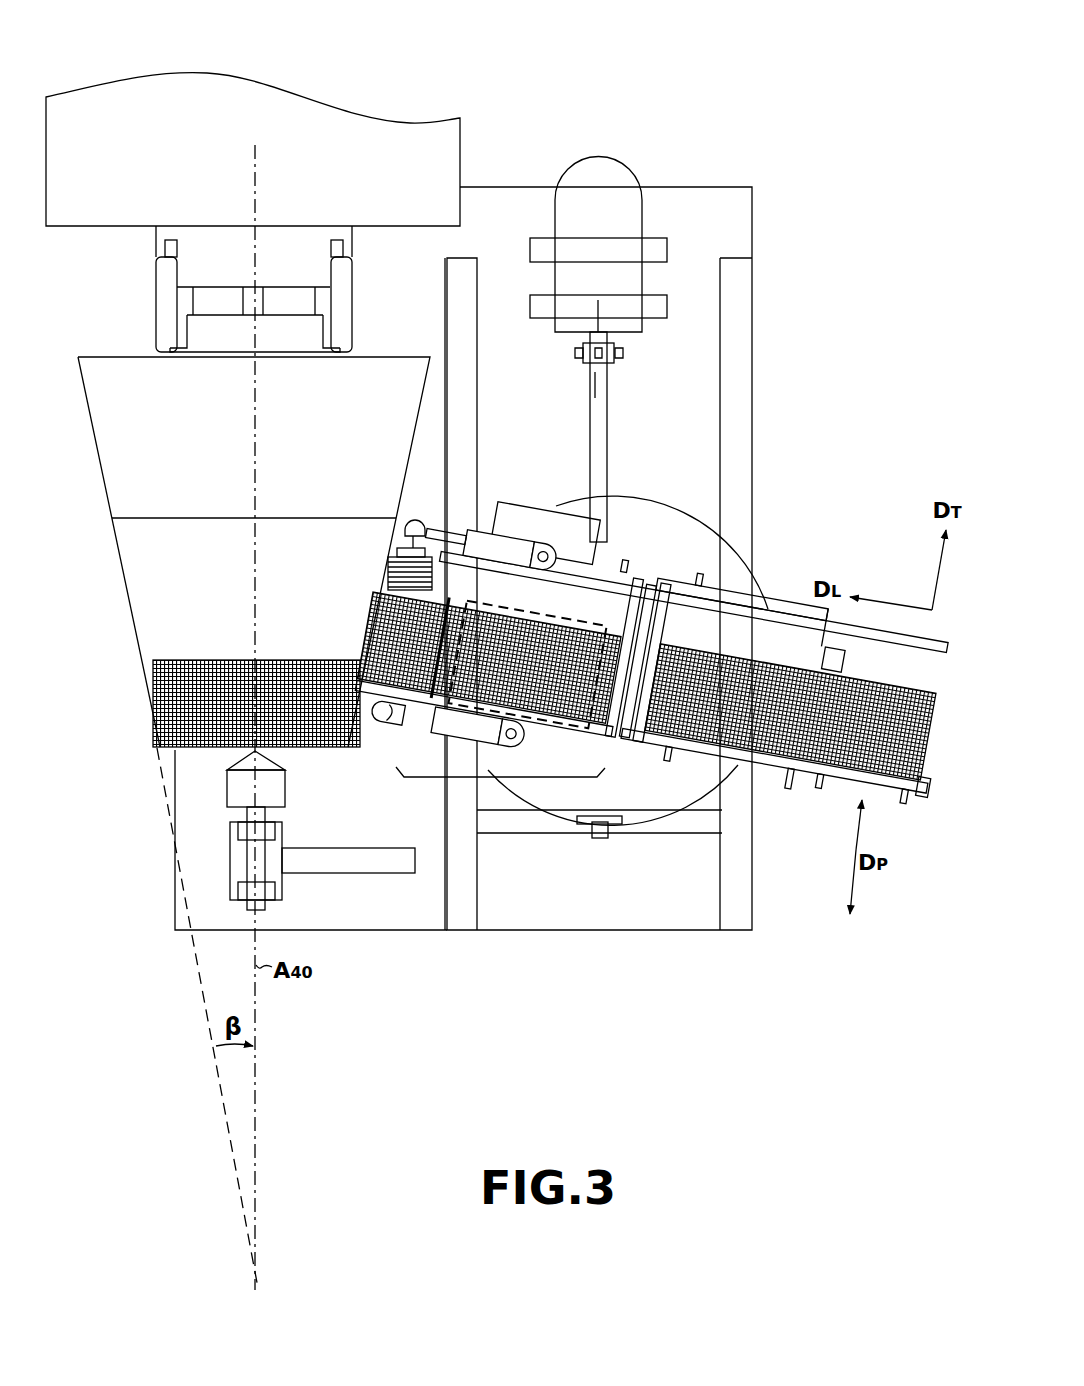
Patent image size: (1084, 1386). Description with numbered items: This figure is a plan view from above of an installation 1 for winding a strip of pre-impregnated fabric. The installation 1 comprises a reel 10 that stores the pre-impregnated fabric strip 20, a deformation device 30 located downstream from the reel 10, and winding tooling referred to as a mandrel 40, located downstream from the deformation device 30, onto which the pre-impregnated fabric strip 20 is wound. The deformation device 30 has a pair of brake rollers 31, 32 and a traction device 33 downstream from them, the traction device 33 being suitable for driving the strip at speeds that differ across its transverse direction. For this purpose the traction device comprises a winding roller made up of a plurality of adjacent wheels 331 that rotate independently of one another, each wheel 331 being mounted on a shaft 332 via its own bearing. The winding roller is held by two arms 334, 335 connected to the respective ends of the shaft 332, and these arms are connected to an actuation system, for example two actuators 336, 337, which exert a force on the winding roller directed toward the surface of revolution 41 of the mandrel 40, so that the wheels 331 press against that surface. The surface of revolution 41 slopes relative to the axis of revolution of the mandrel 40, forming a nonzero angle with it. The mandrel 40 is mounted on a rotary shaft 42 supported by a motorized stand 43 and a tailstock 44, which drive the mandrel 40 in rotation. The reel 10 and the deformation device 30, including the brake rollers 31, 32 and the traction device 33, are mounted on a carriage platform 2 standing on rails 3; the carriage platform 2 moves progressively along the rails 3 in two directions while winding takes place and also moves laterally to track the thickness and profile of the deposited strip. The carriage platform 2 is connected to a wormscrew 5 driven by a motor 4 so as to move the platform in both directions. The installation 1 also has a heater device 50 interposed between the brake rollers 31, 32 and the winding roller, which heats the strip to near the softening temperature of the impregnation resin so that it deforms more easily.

The installation 1 is at (758, 76).
The carriage platform 2 is at (664, 520).
The rails 3 is at (460, 910).
The motor 4 is at (598, 180).
The wormscrew 5 is at (607, 394).
The reel 10 is at (904, 792).
The pre-impregnated fabric strip 20 is at (793, 772).
The deformation device 30 is at (490, 772).
The brake roller 31 is at (620, 744).
The brake roller 32 is at (637, 660).
The traction device 33 is at (410, 697).
The mandrel 40 is at (112, 553).
The surface of revolution 41 is at (140, 631).
The rotary shaft 42 is at (246, 816).
The motorized stand 43 is at (232, 862).
The tailstock 44 is at (92, 212).
The heater device 50 is at (545, 600).
The wheel 331 is at (390, 578).
The shaft 332 is at (398, 542).
The arm 334 is at (380, 715).
The arm 335 is at (410, 518).
The actuator 336 is at (471, 723).
The actuator 337 is at (536, 518).